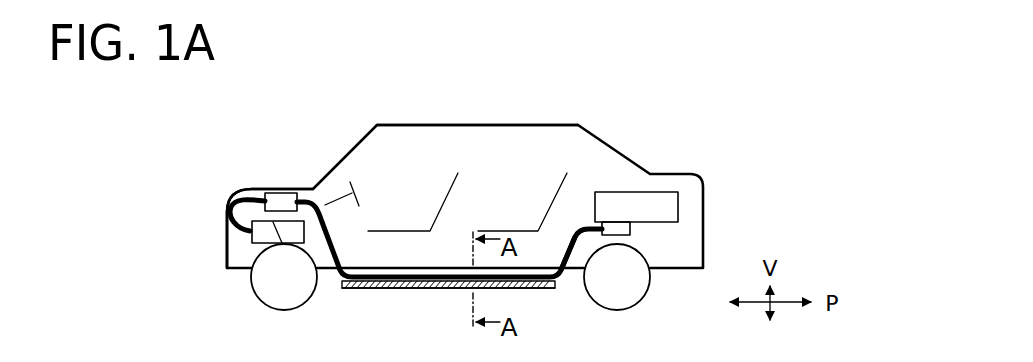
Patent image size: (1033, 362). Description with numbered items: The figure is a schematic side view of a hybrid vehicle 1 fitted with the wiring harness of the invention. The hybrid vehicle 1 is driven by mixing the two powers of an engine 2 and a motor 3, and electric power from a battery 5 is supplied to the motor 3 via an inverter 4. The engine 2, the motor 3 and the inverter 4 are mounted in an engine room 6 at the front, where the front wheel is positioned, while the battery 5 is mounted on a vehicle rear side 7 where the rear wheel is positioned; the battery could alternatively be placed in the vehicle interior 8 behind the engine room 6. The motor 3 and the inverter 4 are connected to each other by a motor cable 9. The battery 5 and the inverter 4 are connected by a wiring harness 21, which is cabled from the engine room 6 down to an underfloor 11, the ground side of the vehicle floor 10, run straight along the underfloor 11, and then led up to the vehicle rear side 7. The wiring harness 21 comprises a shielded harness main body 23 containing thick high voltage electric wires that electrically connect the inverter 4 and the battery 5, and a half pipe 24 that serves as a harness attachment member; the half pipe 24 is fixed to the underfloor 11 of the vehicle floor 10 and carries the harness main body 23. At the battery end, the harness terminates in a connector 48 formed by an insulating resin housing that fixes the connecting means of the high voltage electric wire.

The hybrid vehicle 1 is at (642, 132).
The engine 2 is at (297, 235).
The motor 3 is at (258, 230).
The inverter 4 is at (283, 192).
The battery 5 is at (670, 203).
The engine room 6 is at (233, 248).
The vehicle rear side 7 is at (673, 258).
The vehicle interior 8 is at (435, 168).
The motor cable 9 is at (230, 198).
The vehicle floor 10 is at (543, 265).
The underfloor 11 is at (575, 273).
The wiring harness 21 is at (397, 293).
The harness main body 23 is at (332, 247).
The half pipe 24 is at (427, 289).
The connector 48 is at (632, 231).